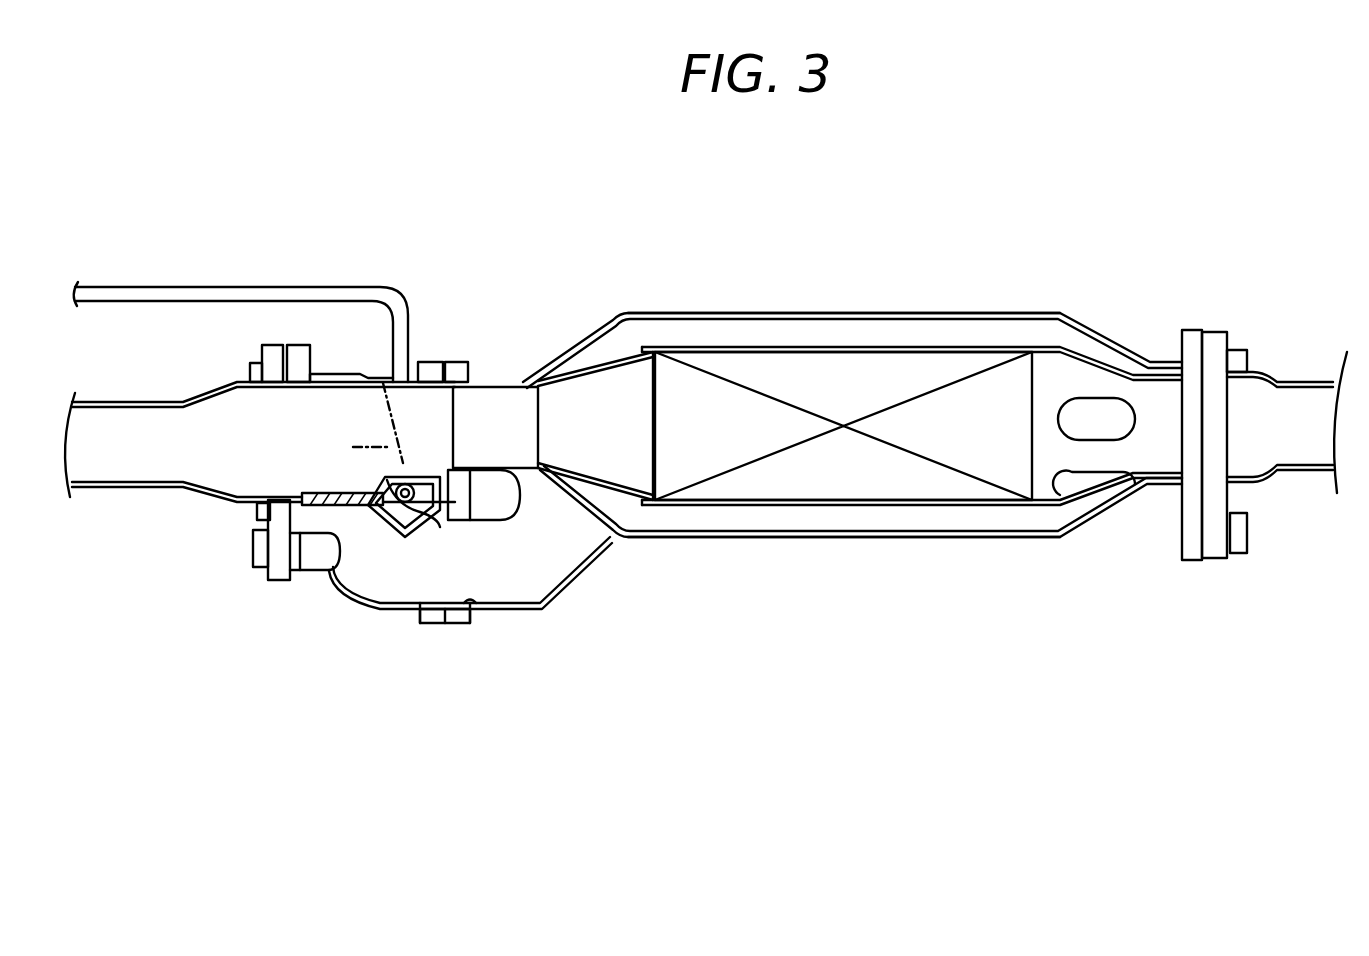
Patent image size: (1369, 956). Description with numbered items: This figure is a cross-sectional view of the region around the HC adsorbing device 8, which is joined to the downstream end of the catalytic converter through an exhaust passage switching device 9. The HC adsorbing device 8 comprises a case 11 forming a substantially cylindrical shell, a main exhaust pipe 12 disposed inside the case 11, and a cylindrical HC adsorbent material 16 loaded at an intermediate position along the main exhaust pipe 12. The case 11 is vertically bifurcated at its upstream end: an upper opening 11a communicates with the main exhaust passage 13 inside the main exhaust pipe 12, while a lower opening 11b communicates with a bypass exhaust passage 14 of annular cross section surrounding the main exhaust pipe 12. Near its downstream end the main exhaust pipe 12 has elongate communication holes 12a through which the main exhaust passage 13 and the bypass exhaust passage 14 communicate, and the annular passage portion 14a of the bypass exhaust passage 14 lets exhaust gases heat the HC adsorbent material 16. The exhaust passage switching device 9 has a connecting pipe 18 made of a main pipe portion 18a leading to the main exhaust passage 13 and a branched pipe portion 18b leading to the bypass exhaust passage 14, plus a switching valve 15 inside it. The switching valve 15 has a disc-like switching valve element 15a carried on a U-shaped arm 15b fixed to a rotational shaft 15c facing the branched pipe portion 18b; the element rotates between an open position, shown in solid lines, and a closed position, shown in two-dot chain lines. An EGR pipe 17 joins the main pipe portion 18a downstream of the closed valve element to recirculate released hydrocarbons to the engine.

The HC adsorbing device 8 is at (859, 296).
The exhaust passage switching device 9 is at (347, 328).
The case 11 is at (982, 540).
The upper opening 11a is at (454, 464).
The lower opening 11b is at (478, 608).
The main exhaust pipe 12 is at (616, 500).
The communication holes 12a is at (1095, 440).
The main exhaust passage 13 is at (610, 446).
The bypass exhaust passage 14 is at (575, 535).
The annular passage portion 14a is at (780, 326).
The switching valve 15 is at (367, 544).
The switching valve element 15a is at (316, 492).
The arm 15b is at (404, 535).
The rotational shaft 15c is at (440, 524).
The HC adsorbent material 16 is at (820, 500).
The EGR pipe 17 is at (226, 286).
The connecting pipe 18 is at (358, 373).
The main pipe portion 18a is at (378, 374).
The branched pipe portion 18b is at (380, 610).